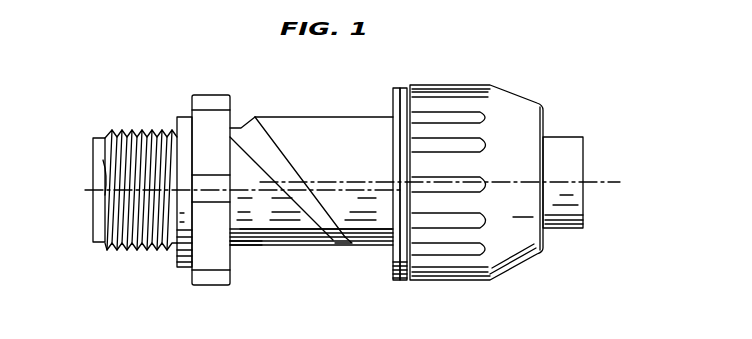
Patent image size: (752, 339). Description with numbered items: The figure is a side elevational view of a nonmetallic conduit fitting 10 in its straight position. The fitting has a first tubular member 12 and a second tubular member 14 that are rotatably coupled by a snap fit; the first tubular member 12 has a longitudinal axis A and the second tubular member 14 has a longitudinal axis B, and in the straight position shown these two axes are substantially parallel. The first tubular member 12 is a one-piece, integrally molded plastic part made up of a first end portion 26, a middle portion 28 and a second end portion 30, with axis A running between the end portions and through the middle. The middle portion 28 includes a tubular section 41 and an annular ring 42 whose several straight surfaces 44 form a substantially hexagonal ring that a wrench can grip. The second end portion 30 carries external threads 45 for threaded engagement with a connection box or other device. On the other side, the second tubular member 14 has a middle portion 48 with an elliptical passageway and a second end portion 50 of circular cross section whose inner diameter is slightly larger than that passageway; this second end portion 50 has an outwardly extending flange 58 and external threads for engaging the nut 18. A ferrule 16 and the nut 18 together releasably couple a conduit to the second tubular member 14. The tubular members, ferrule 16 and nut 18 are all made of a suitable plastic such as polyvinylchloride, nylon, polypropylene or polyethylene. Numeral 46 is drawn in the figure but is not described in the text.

The conduit fitting 10 is at (76, 120).
The first tubular member 12 is at (190, 100).
The second tubular member 14 is at (353, 116).
The ferrule 16 is at (573, 135).
The nut 18 is at (476, 84).
The first end portion 26 is at (336, 249).
The middle portion 28 is at (233, 109).
The second end portion 30 is at (122, 128).
The tubular section 41 is at (301, 246).
The annular ring 42 is at (231, 277).
The straight surfaces 44 is at (231, 252).
The external threads 45 is at (108, 250).
The tongue 46 is at (275, 116).
The middle portion 48 is at (393, 112).
The second end portion 50 is at (404, 88).
The outwardly extending flange 58 is at (402, 282).
The longitudinal axis A is at (271, 192).
The longitudinal axis B is at (342, 182).